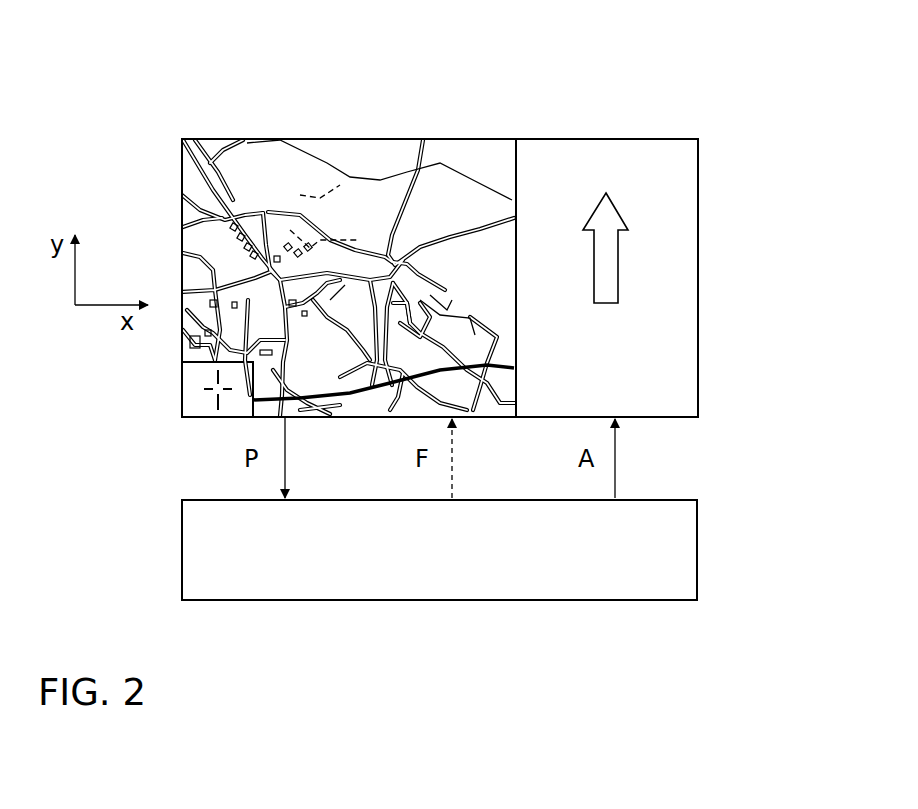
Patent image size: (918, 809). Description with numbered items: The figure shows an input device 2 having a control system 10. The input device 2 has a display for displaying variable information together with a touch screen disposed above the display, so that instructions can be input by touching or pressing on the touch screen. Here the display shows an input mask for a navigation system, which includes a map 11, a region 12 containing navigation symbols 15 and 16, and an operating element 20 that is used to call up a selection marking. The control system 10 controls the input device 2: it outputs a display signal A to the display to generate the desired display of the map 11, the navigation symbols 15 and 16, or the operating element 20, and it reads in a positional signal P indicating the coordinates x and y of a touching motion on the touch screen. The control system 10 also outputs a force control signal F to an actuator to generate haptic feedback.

The input device 2 is at (724, 110).
The control system 10 is at (458, 562).
The map 11 is at (253, 193).
The region 12 is at (680, 200).
The navigation symbol 15 is at (607, 282).
The navigation symbol 16 is at (650, 361).
The operating element 20 is at (199, 403).